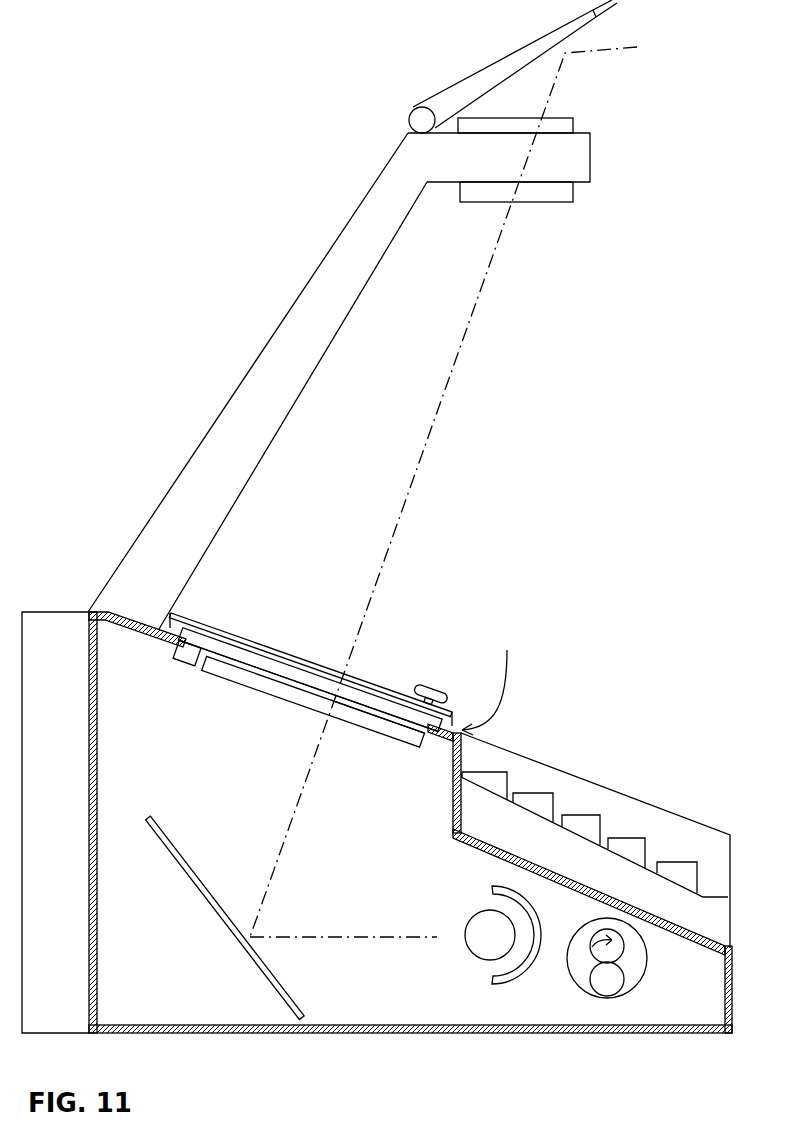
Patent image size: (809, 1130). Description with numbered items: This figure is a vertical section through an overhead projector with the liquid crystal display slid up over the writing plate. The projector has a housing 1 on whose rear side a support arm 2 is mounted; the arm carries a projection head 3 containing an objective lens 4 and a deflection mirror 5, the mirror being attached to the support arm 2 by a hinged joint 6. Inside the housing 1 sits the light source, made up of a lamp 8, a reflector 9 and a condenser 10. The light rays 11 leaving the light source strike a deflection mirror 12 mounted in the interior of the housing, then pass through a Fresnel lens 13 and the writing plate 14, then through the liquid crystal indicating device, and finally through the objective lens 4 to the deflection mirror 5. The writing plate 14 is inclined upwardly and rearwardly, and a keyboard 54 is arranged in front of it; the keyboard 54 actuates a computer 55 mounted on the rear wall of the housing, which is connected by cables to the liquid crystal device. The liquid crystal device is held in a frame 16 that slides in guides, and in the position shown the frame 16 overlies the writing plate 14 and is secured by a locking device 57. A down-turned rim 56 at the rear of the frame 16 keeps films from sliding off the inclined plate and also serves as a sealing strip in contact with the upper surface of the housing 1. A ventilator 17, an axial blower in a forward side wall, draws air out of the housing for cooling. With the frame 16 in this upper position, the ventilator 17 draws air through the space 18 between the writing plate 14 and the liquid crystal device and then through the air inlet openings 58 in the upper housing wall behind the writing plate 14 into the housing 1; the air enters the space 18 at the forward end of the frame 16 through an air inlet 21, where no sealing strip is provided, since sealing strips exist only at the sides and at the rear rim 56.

The housing 1 is at (360, 970).
The support arm 2 is at (333, 280).
The projection head 3 is at (563, 165).
The objective lens 4 is at (550, 195).
The deflection mirror 5 is at (503, 60).
The hinged joint 6 is at (420, 118).
The lamp 8 is at (477, 940).
The reflector 9 is at (517, 972).
The condenser 10 is at (428, 947).
The light rays 11 is at (443, 492).
The deflection mirror 12 is at (275, 985).
The Fresnel lens 13 is at (267, 685).
The writing plate 14 is at (293, 683).
The frame 16 is at (245, 645).
The ventilator 17 is at (610, 977).
The space 18 is at (367, 698).
The air inlet 21 is at (489, 680).
The keyboard 54 is at (627, 848).
The computer 55 is at (57, 632).
The down-turned rim 56 is at (173, 627).
The locking device 57 is at (432, 687).
The air inlet openings 58 is at (192, 652).